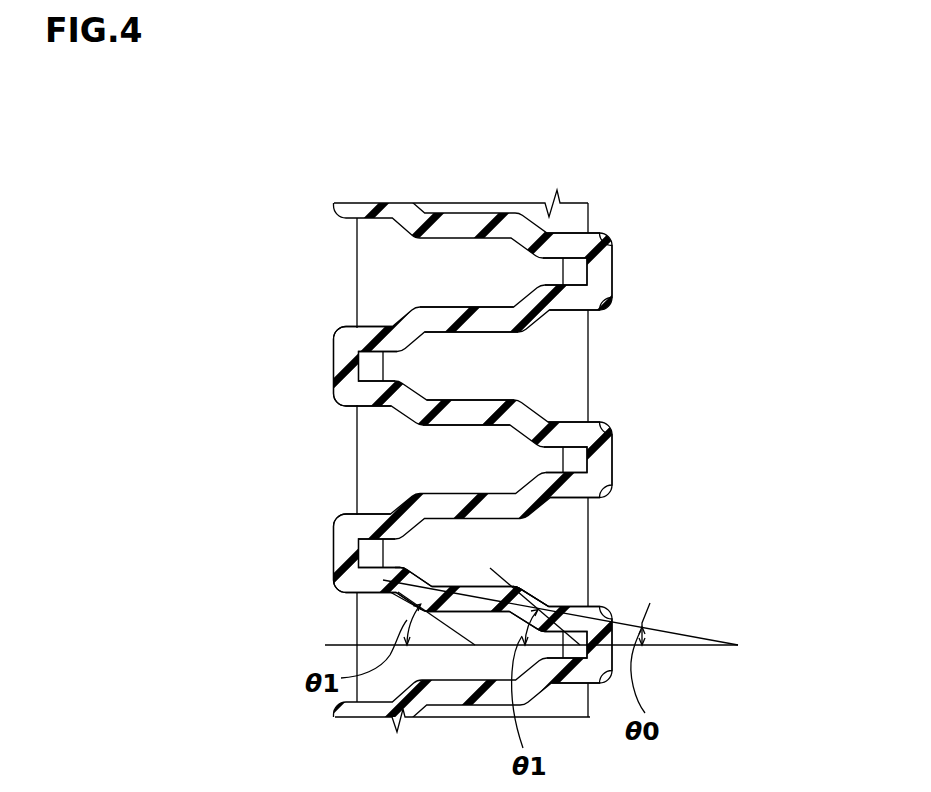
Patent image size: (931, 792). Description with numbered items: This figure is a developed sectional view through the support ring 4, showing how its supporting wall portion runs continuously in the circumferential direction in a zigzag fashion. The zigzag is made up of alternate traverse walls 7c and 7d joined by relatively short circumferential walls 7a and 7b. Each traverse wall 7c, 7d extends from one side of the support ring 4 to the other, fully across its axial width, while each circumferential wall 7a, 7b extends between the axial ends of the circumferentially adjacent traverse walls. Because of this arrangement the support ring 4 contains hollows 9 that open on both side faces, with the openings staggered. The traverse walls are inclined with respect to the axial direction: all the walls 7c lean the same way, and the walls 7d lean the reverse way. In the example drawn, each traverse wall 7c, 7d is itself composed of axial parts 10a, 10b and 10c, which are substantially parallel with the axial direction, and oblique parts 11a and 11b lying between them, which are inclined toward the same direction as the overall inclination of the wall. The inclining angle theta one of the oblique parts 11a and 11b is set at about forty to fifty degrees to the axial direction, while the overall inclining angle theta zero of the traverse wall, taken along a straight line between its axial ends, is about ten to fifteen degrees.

The support ring 4 is at (652, 190).
The circumferential wall 7a is at (345, 343).
The circumferential wall 7b is at (600, 273).
The traverse wall 7c is at (484, 404).
The traverse wall 7d is at (497, 318).
The hollow 9 is at (568, 340).
The axial part 10a is at (390, 578).
The axial part 10b is at (488, 566).
The axial part 10c is at (568, 614).
The oblique part 11a is at (398, 592).
The oblique part 11b is at (530, 601).